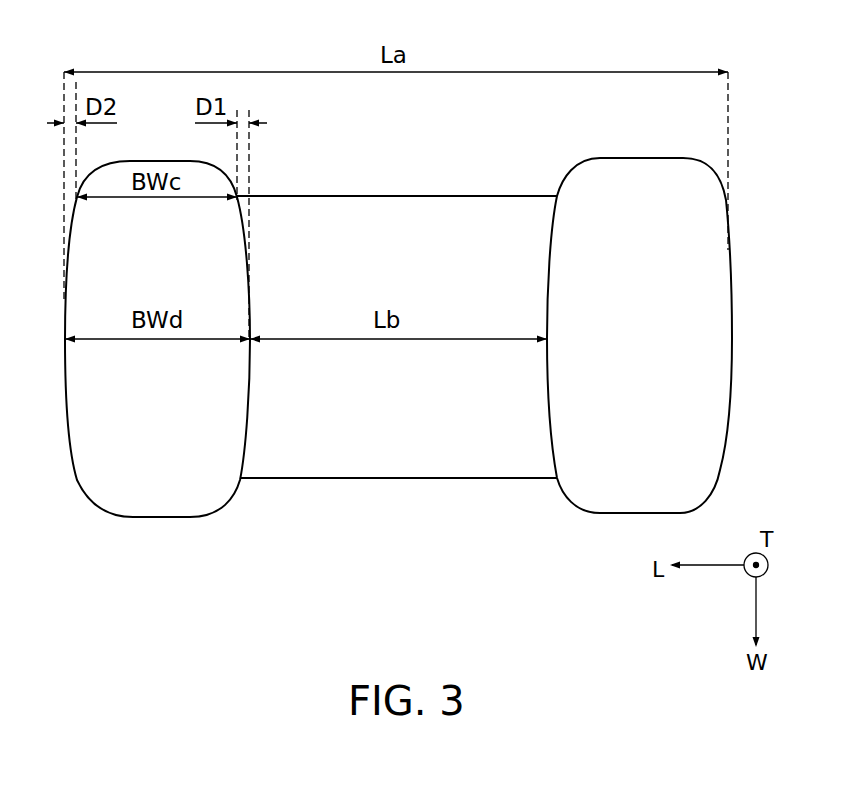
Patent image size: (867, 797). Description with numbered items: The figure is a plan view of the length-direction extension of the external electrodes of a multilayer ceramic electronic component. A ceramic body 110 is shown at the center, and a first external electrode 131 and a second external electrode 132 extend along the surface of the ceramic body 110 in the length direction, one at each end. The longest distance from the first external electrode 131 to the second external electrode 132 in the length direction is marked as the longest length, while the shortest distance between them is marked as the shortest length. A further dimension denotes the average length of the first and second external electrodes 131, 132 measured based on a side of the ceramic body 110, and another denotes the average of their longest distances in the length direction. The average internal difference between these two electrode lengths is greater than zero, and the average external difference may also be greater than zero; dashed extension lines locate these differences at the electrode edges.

The ceramic body 110 is at (399, 194).
The first external electrode 131 is at (158, 160).
The second external electrode 132 is at (635, 158).